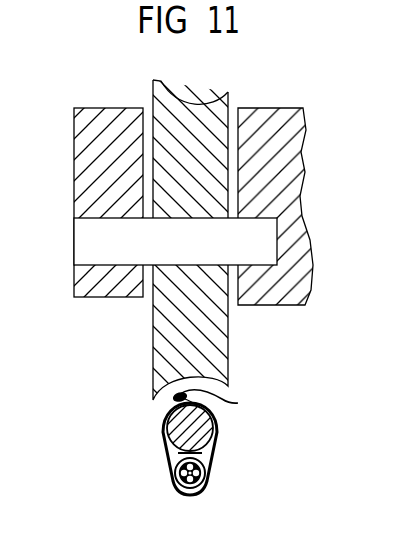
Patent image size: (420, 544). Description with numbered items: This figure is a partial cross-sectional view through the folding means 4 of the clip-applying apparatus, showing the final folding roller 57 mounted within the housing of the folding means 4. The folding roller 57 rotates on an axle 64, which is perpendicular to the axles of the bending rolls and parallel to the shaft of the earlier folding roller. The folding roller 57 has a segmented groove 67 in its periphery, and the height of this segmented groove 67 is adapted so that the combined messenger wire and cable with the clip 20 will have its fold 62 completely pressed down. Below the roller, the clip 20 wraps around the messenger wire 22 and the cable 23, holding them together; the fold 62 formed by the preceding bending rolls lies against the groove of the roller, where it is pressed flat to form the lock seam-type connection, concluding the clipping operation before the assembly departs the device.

The folding means 4 is at (310, 166).
The folding roller 57 is at (222, 322).
The segmented groove 67 is at (185, 103).
The axle 64 is at (80, 240).
The fold 62 is at (238, 403).
The clip 20 is at (215, 455).
The messenger wire 22 is at (177, 428).
The cable 23 is at (183, 483).